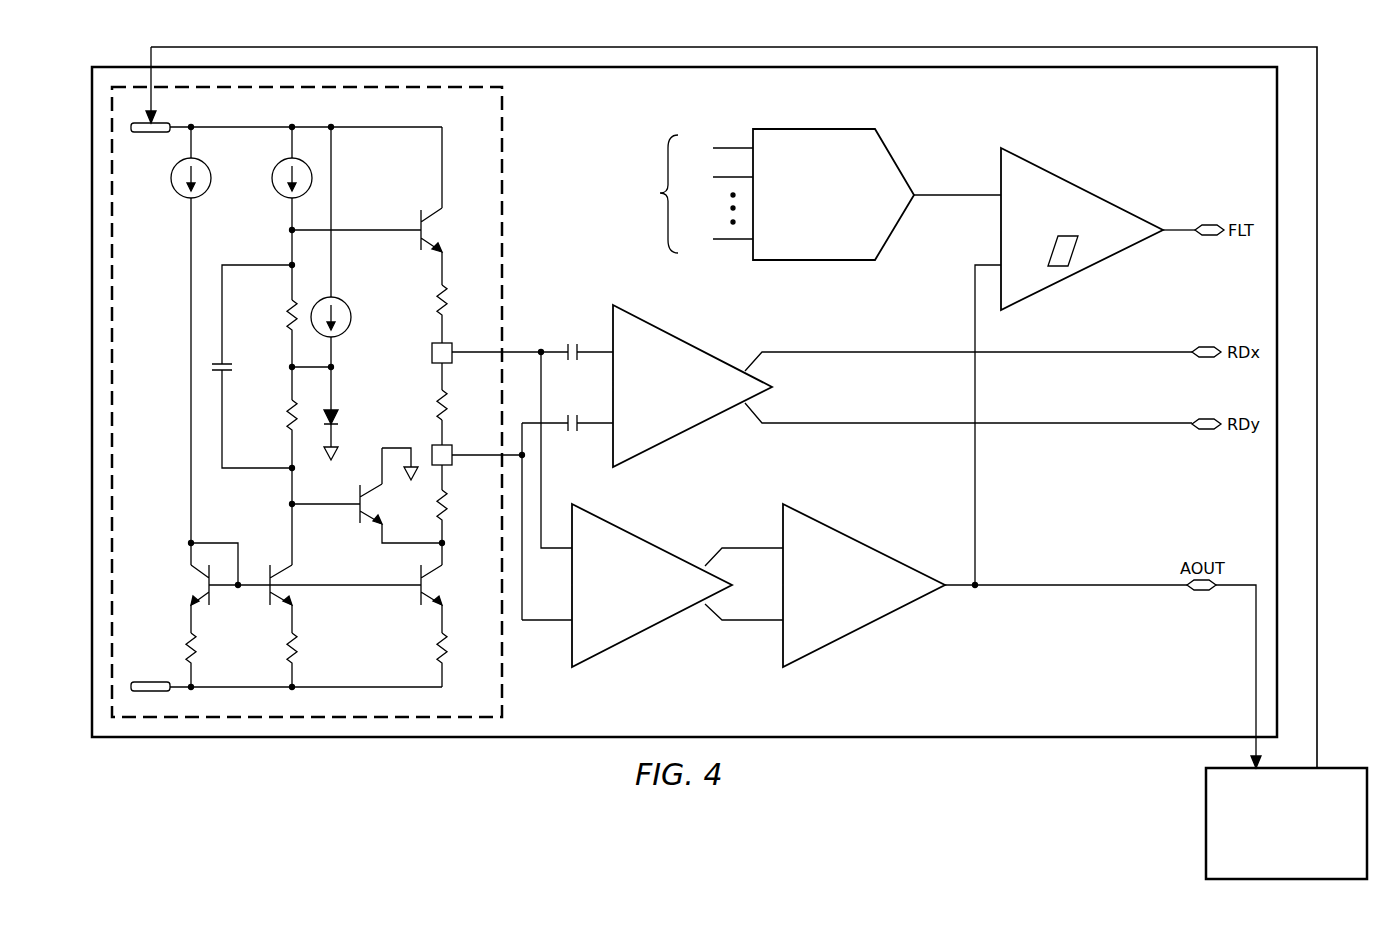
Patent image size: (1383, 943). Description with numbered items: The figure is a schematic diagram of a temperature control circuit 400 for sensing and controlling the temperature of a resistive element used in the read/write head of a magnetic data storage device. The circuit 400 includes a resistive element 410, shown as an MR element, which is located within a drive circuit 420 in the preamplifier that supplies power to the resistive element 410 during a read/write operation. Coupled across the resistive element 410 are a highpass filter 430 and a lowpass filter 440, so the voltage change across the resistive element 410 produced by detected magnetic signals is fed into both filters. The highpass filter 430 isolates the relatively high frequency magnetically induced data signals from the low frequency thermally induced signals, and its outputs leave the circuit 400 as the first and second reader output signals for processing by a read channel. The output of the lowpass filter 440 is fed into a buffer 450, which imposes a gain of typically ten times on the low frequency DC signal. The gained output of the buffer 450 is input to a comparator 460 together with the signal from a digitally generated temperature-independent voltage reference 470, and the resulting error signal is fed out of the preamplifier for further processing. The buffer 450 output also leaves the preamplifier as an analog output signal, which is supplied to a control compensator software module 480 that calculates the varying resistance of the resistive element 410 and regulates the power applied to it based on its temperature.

The temperature control circuit 400 is at (1236, 121).
The resistive element 410 is at (436, 402).
The drive circuit 420 is at (509, 124).
The highpass filter 430 is at (674, 337).
The lowpass filter 440 is at (636, 636).
The buffer 450 is at (866, 628).
The comparator 460 is at (1082, 187).
The temperature-independent voltage reference 470 is at (815, 129).
The control compensator software module 480 is at (1206, 822).